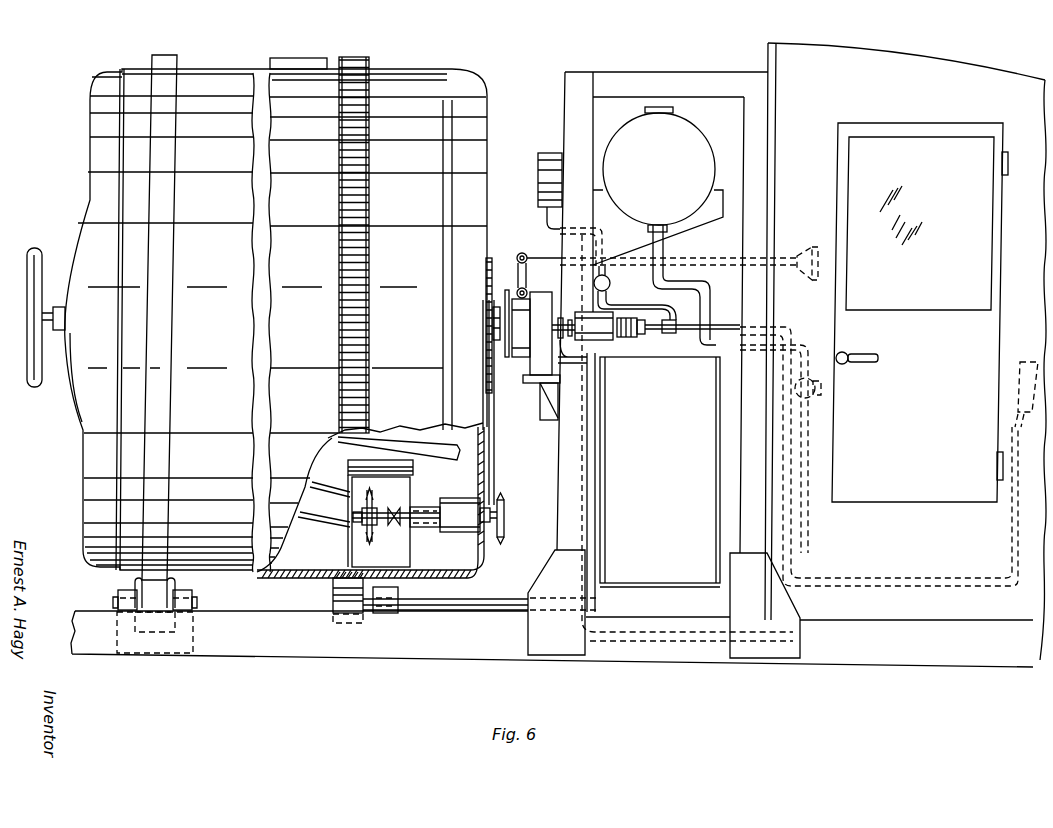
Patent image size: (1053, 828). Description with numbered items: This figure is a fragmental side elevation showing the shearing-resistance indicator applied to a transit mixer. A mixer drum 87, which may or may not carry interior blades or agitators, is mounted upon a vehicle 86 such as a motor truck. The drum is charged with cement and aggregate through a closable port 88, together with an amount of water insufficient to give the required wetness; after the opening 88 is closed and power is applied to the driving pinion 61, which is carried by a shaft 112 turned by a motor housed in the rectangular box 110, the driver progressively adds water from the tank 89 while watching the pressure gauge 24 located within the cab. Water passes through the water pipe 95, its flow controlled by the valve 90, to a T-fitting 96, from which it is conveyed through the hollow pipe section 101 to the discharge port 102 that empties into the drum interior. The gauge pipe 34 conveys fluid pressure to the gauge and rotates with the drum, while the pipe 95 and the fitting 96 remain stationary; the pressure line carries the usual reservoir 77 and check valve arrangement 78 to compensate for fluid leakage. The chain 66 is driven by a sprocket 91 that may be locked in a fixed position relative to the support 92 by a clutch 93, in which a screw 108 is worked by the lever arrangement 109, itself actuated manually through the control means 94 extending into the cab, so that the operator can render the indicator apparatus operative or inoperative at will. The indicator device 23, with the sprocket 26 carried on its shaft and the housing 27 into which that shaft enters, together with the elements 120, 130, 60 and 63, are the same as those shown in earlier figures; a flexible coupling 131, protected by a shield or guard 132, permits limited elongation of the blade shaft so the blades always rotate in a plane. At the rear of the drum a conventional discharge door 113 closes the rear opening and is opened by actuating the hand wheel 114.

The device 23 is at (452, 512).
The pressure gauge 24 is at (1023, 373).
The sprocket 26 is at (505, 522).
The housing 27 is at (430, 507).
The gauge pipe 34 is at (718, 325).
The element 60 is at (370, 384).
The driving pinion 61 is at (333, 594).
The element 63 is at (172, 590).
The chain 66 is at (496, 463).
The reservoir 77 is at (540, 175).
The check valve arrangement 78 is at (611, 284).
The vehicle 86 is at (890, 605).
The mixer drum 87 is at (93, 523).
The closable port 88 is at (284, 60).
The tank 89 is at (697, 138).
The valve 90 is at (822, 386).
The sprocket 91 is at (486, 293).
The support 92 is at (538, 386).
The clutch 93 is at (507, 288).
The control means 94 is at (818, 270).
The water pipe 95 is at (672, 251).
The T-fitting 96 is at (603, 345).
The hollow pipe section 101 is at (583, 362).
The discharge port 102 is at (486, 325).
The screw 108 is at (530, 292).
The lever arrangement 109 is at (525, 253).
The rectangular box 110 is at (607, 487).
The shaft 112 is at (508, 598).
The discharge door 113 is at (78, 400).
The hand wheel 114 is at (38, 390).
The element 120 is at (373, 528).
The element 130 is at (350, 477).
The flexible coupling 131 is at (447, 578).
The shield 132 is at (445, 596).